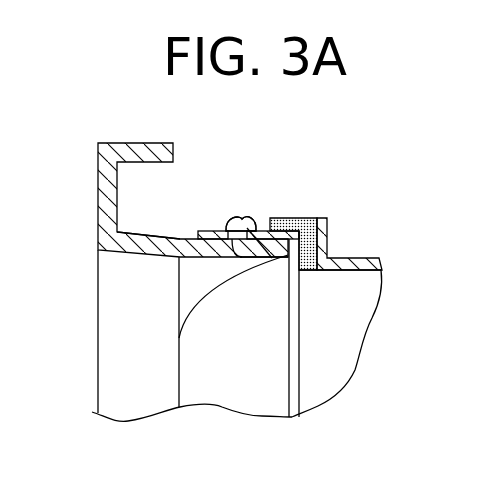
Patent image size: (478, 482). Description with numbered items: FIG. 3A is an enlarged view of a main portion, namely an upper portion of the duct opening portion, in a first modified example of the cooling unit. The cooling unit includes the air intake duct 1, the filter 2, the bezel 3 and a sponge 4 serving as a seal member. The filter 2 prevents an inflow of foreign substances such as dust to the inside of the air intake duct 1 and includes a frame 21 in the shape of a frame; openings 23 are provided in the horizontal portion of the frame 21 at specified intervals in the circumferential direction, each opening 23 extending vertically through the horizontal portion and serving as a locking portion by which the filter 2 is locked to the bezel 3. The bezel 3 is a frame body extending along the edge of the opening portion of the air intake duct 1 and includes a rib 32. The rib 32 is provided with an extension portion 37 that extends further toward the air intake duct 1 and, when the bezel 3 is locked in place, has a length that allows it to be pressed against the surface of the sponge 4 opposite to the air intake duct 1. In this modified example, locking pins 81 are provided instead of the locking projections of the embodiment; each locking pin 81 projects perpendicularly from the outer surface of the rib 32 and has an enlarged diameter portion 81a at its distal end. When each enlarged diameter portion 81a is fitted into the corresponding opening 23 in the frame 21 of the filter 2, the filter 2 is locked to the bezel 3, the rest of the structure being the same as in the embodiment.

The air intake duct 1 is at (353, 258).
The filter 2 is at (300, 343).
The bezel 3 is at (97, 190).
The sponge 4 is at (305, 217).
The frame 21 is at (212, 230).
The opening 23 is at (224, 262).
The rib 32 is at (157, 237).
The extension portion 37 is at (265, 262).
The locking pin 81 is at (253, 215).
The enlarged diameter portion 81a is at (233, 218).